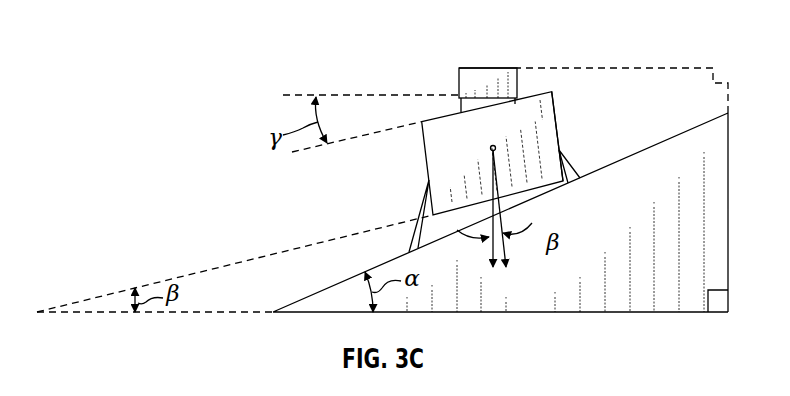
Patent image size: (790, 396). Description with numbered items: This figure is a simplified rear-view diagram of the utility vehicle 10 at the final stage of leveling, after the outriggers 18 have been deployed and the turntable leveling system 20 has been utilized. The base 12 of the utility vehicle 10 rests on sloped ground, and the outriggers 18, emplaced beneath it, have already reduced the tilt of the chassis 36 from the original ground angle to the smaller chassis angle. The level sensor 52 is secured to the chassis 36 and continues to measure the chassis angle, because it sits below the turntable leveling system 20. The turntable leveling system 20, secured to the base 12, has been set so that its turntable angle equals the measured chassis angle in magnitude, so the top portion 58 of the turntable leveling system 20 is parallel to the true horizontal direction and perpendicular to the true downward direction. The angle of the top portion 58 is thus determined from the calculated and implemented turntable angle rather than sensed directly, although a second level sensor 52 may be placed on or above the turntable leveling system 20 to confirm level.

The utility vehicle 10 is at (382, 36).
The base 12 is at (377, 195).
The outriggers 18 is at (403, 242).
The turntable leveling system 20 is at (489, 68).
The chassis 36 is at (551, 92).
The level sensor 52 is at (495, 146).
The top portion 58 is at (470, 55).